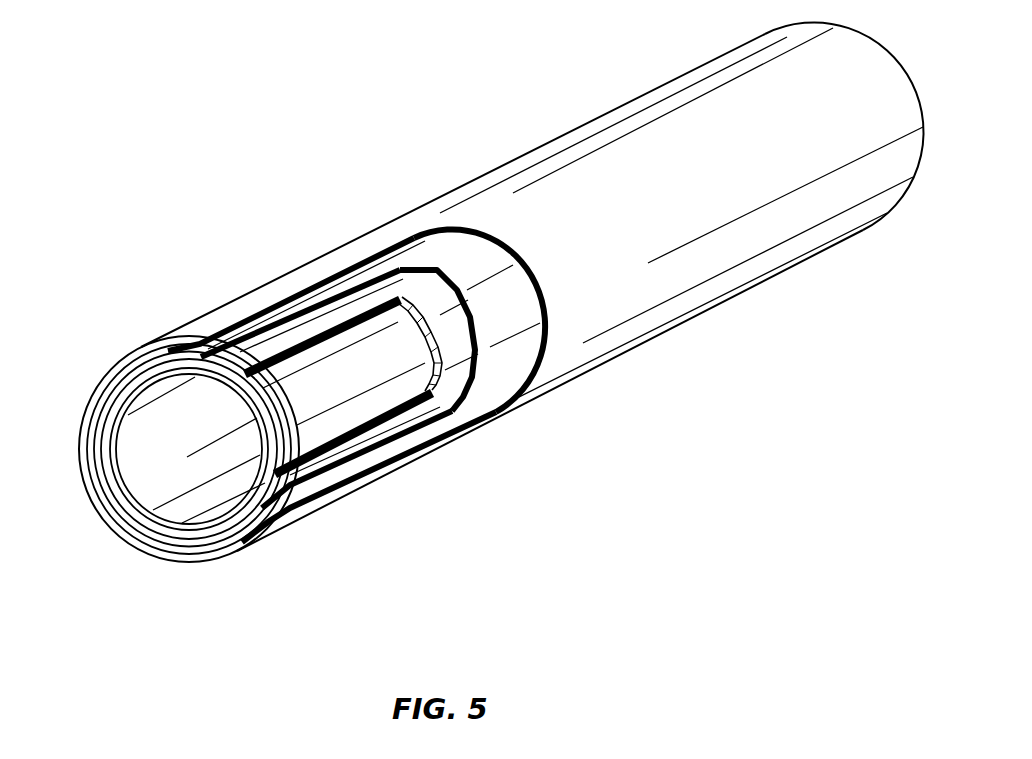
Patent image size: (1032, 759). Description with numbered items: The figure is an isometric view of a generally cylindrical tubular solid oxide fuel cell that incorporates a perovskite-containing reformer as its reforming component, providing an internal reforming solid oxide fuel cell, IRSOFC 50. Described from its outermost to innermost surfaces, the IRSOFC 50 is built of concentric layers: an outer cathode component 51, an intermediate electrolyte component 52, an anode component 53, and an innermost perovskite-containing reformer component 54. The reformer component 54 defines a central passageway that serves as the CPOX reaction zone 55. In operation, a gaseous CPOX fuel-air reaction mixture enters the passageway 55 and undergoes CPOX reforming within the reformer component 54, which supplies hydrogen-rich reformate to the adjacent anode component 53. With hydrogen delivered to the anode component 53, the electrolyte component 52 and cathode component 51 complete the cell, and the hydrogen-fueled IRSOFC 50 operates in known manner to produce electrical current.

The IRSOFC 50 is at (396, 111).
The cathode component 51 is at (697, 282).
The intermediate electrolyte component 52 is at (500, 355).
The anode component 53 is at (405, 410).
The perovskite-containing reformer component 54 is at (318, 418).
The passageway CPOX reaction zone 55 is at (173, 417).